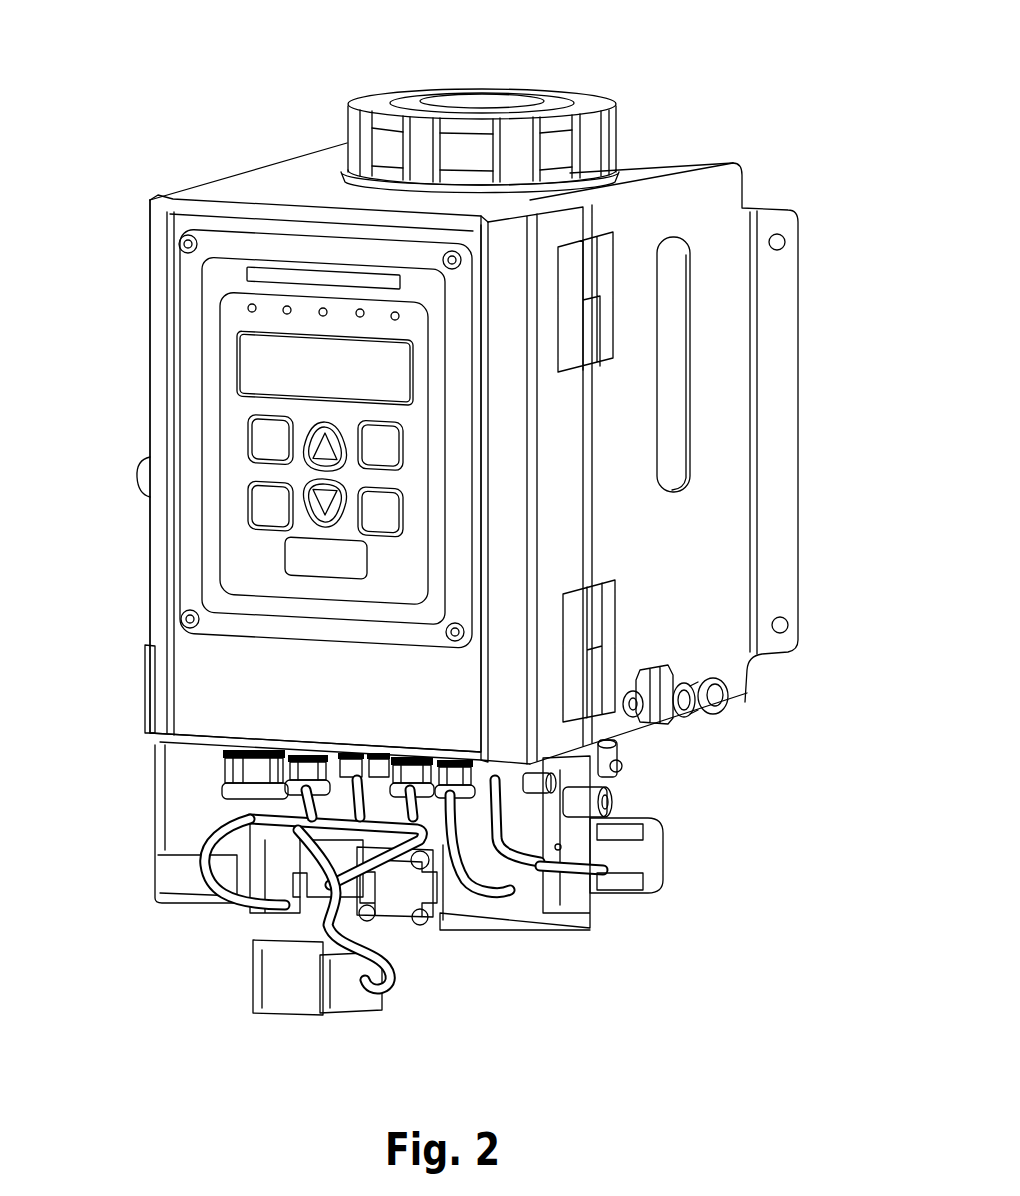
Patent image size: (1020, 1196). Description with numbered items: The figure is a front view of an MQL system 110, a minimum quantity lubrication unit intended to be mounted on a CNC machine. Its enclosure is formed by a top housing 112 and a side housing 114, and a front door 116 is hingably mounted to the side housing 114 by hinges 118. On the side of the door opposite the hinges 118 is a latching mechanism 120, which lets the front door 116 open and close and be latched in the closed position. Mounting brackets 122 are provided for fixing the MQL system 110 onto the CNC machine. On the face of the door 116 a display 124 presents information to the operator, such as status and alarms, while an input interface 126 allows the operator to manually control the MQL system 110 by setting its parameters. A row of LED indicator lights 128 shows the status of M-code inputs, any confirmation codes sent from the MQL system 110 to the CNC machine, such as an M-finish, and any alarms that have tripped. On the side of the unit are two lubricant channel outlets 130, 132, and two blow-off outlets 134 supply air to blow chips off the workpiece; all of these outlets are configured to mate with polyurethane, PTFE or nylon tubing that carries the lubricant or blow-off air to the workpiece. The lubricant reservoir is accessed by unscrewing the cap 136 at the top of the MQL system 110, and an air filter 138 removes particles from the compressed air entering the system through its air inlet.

The MQL system 110 is at (194, 30).
The top housing 112 is at (652, 176).
The side housing 114 is at (722, 204).
The front door 116 is at (230, 670).
The hinges 118 is at (593, 315).
The latching mechanism 120 is at (143, 470).
The mounting brackets 122 is at (783, 460).
The display 124 is at (255, 357).
The input interface 126 is at (240, 538).
The LED indicator lights 128 is at (395, 312).
The lubricant channel outlet 130 is at (722, 703).
The lubricant channel outlet 132 is at (685, 702).
The blow-off outlets 134 is at (590, 802).
The cap 136 is at (588, 103).
The air filter 138 is at (175, 805).